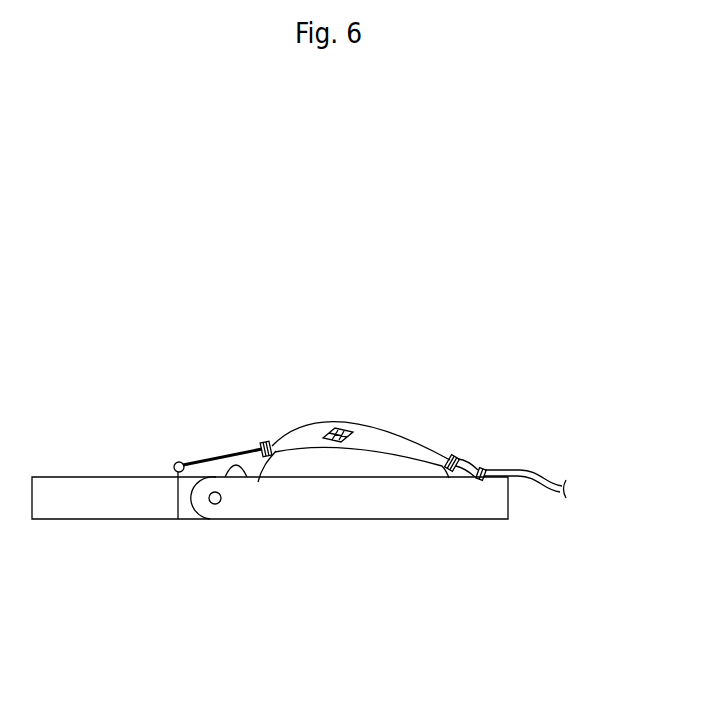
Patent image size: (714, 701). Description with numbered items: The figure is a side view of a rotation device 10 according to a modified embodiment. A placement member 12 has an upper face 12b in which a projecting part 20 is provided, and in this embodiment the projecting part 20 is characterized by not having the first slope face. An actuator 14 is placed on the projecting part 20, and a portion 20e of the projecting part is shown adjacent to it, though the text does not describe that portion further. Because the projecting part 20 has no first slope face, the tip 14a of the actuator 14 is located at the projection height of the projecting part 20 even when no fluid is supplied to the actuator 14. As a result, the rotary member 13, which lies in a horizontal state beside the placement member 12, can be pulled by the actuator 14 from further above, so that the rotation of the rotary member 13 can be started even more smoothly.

The rotation device 10 is at (626, 633).
The placement member 12 is at (450, 530).
The upper face of placement member 12b is at (227, 477).
The rotary member 13 is at (108, 524).
The actuator 14 is at (380, 422).
The tip of actuator 14a is at (262, 442).
The projecting part 20 is at (367, 466).
The bent end of lower sheet member 20e is at (258, 482).